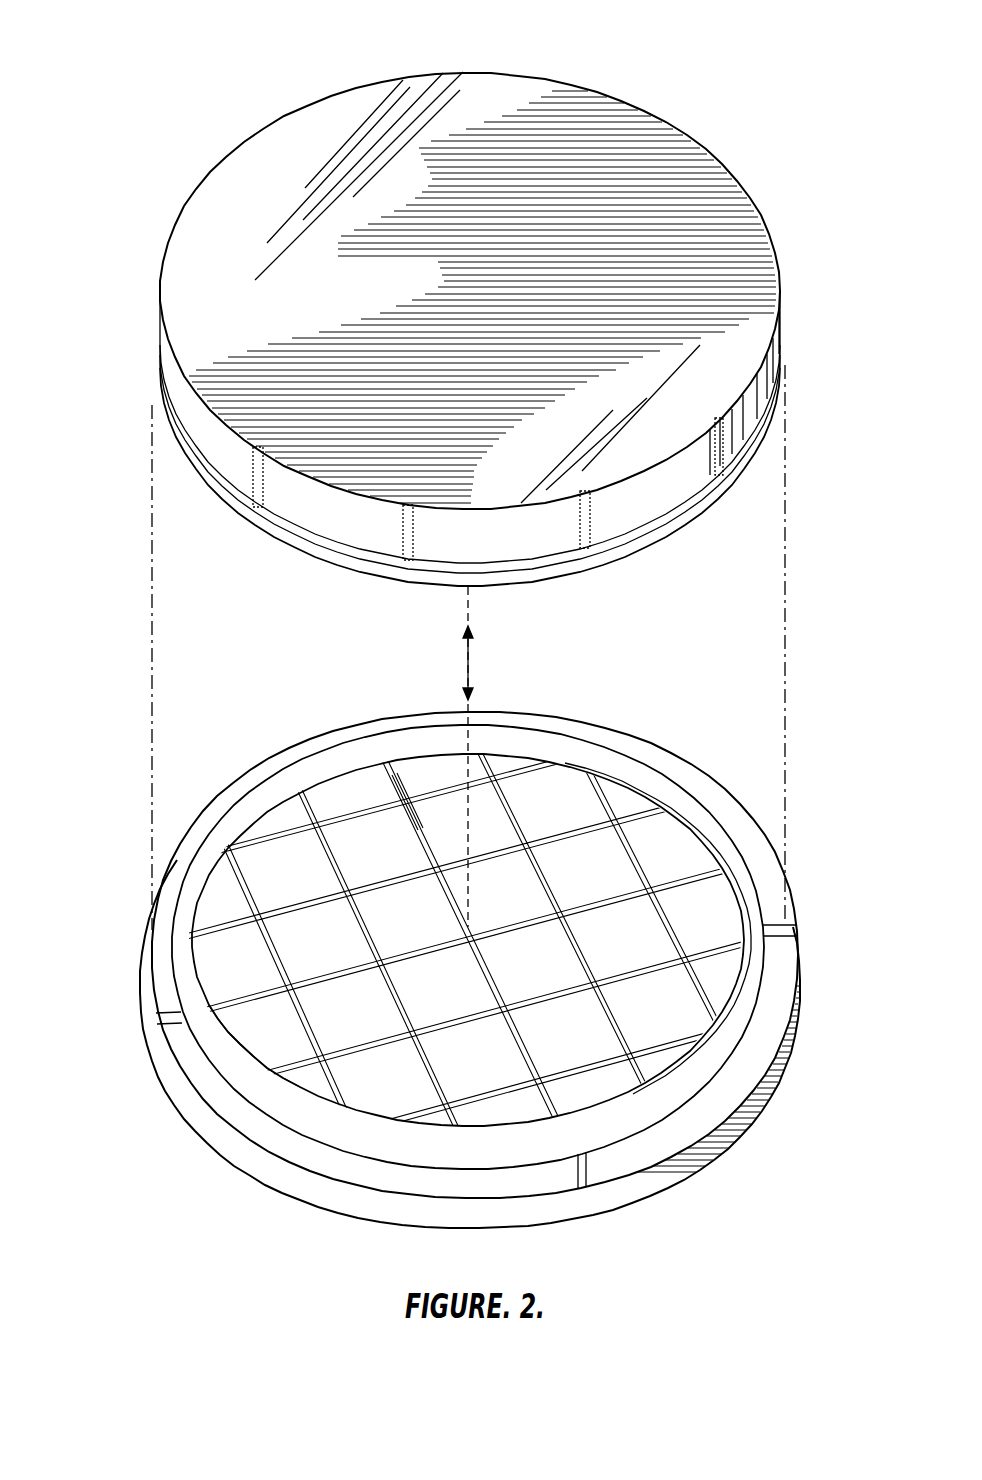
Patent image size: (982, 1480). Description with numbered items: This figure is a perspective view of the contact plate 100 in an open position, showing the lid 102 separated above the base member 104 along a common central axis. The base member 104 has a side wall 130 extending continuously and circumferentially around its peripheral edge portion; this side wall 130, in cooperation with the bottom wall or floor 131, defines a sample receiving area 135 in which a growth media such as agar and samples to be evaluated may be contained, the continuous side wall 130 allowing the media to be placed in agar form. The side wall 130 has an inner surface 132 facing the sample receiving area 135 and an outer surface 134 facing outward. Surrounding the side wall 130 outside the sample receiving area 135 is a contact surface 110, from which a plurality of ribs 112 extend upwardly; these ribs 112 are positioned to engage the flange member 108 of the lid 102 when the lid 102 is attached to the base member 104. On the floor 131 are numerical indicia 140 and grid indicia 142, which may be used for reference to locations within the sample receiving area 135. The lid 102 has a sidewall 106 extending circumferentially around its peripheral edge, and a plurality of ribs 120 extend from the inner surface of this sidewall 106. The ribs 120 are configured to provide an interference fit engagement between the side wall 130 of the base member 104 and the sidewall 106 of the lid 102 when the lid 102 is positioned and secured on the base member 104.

The contact plate 100 is at (680, 68).
The lid 102 is at (774, 258).
The base member 104 is at (745, 1083).
The sidewall 106 is at (190, 405).
The flange member 108 is at (665, 538).
The contact surface 110 is at (525, 1182).
The ribs 112 is at (796, 926).
The ribs 120 is at (590, 500).
The side wall 130 is at (293, 1090).
The bottom wall (floor) 131 is at (712, 906).
The inner surface 132 is at (268, 798).
The outer surface 134 is at (223, 1058).
The sample receiving area 135 is at (575, 790).
The numerical indicia 140 is at (255, 1038).
The grid indicia 142 is at (397, 803).